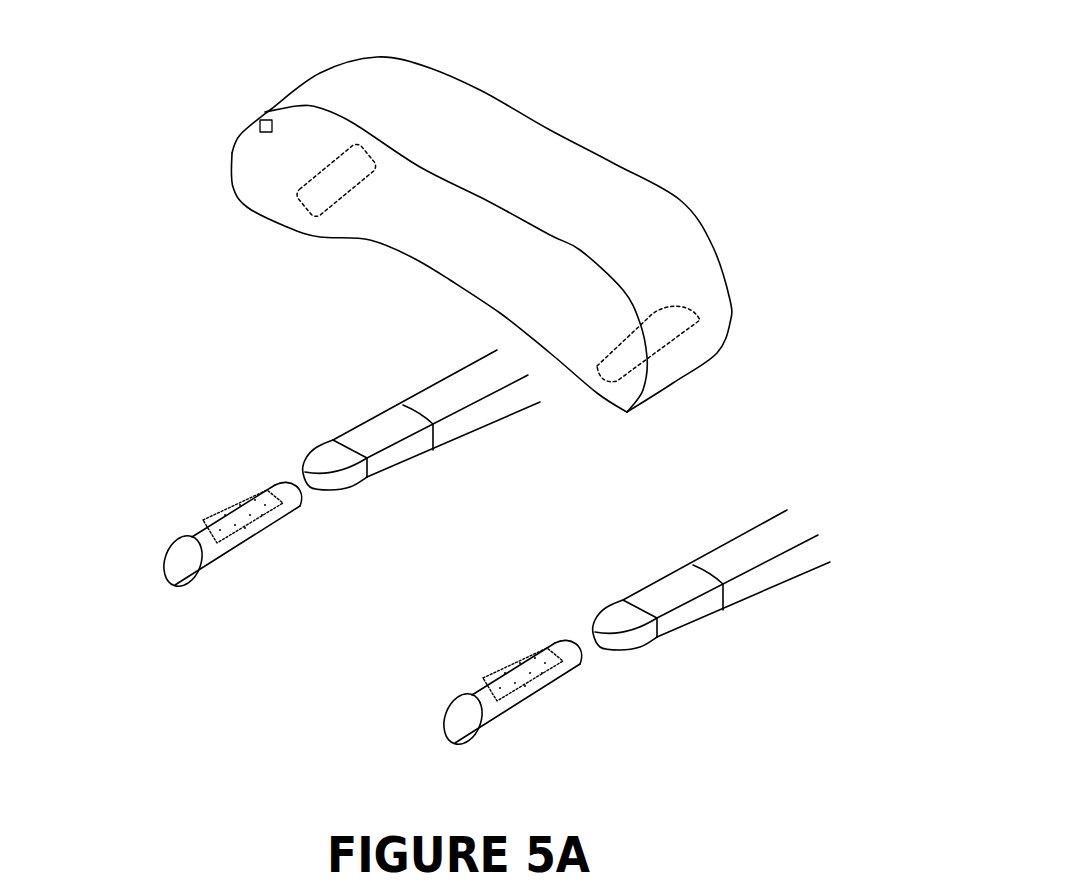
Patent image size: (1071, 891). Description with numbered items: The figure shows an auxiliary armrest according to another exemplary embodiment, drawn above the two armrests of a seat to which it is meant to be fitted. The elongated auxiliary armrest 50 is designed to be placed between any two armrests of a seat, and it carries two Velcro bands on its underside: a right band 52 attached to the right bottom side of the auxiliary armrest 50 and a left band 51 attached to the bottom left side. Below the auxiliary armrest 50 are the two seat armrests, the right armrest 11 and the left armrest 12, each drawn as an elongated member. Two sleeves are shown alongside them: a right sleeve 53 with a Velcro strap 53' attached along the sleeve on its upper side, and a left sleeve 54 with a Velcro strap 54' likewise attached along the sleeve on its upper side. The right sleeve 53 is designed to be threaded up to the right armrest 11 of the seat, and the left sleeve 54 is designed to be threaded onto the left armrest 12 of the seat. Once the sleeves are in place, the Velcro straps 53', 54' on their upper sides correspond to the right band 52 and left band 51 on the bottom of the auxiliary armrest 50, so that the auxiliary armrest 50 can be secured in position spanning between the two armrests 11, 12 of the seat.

The auxiliary armrest 50 is at (583, 175).
The left band 51 is at (320, 182).
The right band 52 is at (655, 333).
The left armrest 12 is at (430, 395).
The right armrest 11 is at (742, 567).
The left sleeve 54 is at (317, 559).
The Velcro strap 54' is at (307, 563).
The right sleeve 53 is at (604, 713).
The Velcro strap 53' is at (595, 717).